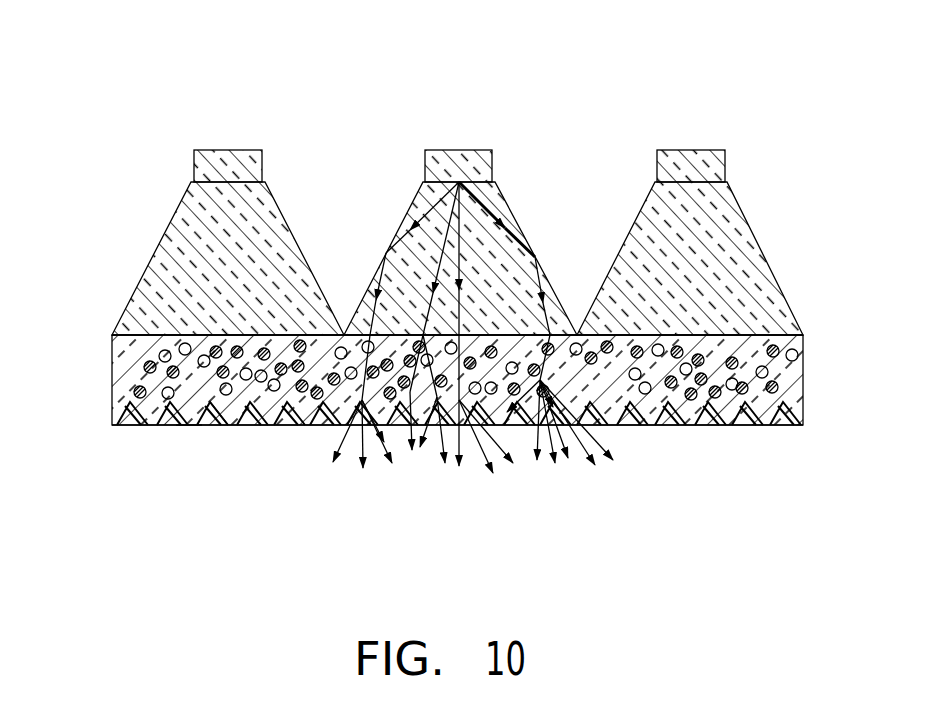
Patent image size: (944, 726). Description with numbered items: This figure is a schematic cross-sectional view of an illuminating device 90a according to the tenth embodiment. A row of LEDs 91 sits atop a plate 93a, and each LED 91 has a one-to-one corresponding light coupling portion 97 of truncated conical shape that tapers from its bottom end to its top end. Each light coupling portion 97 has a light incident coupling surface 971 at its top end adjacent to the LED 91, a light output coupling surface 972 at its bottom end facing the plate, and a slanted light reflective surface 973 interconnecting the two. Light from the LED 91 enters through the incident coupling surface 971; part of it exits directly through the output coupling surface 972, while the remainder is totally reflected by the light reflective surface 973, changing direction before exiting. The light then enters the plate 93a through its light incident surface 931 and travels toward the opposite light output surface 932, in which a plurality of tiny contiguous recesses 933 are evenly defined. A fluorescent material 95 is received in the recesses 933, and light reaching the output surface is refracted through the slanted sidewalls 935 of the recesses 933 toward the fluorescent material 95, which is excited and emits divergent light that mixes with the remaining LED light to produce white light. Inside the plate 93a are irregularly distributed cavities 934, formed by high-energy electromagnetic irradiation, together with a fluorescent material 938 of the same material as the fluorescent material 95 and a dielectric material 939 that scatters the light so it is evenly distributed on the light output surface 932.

The illuminating device 90a is at (463, 70).
The LED 91 is at (462, 150).
The light coupling portion 97 is at (498, 200).
The light incident coupling surface 971 is at (455, 184).
The light output coupling surface 972 is at (362, 400).
The slanted light reflective surface 973 is at (392, 246).
The light incident surface 931 is at (130, 337).
The plate 93a is at (118, 390).
The light output surface 932 is at (137, 425).
The recesses 933 is at (197, 425).
The fluorescent material 95 is at (211, 405).
The slanted sidewalls 935 is at (222, 427).
The cavities 934 is at (798, 357).
The fluorescent material 938 is at (783, 397).
The dielectric material 939 is at (770, 393).